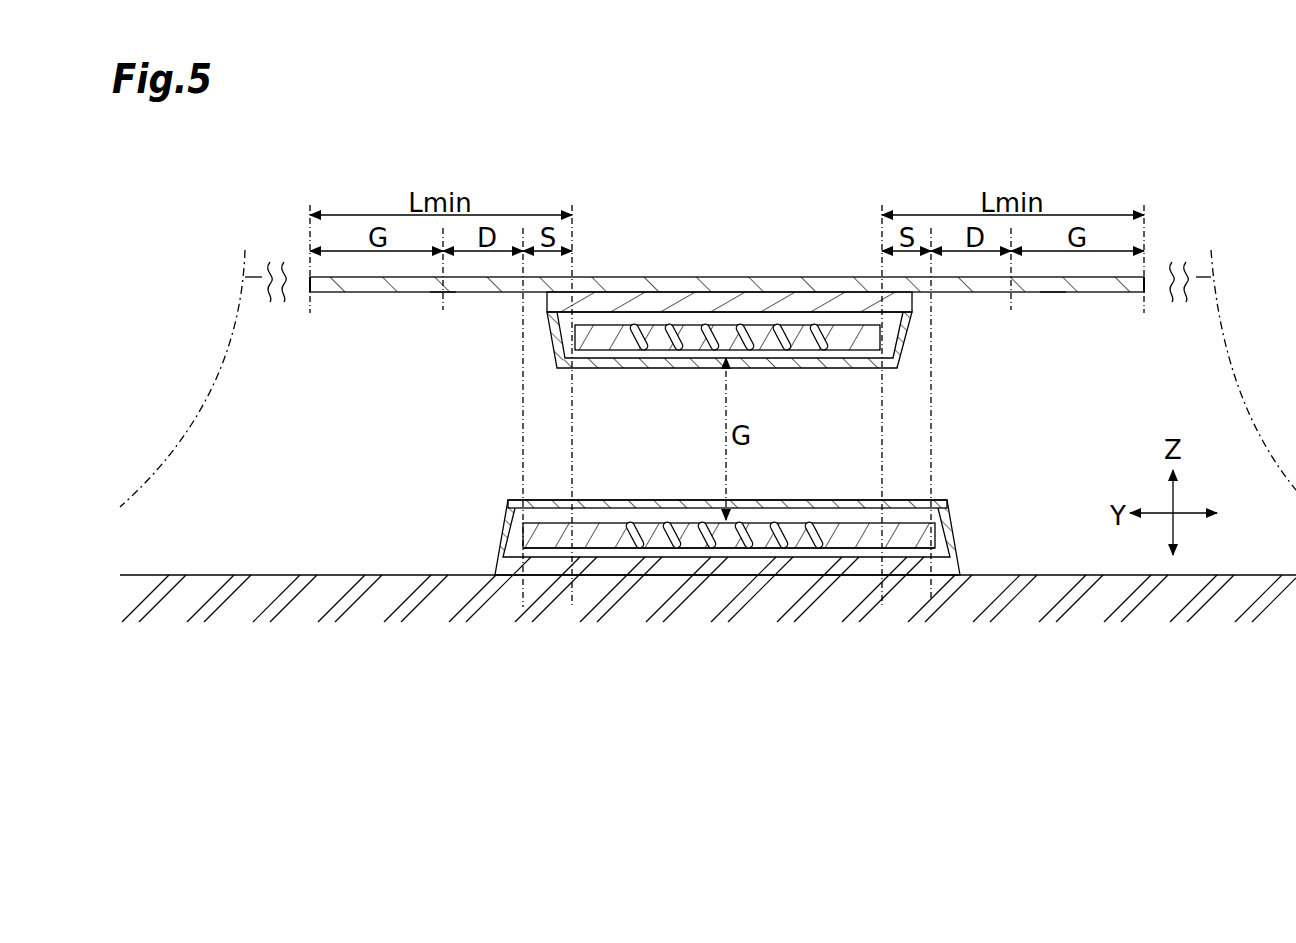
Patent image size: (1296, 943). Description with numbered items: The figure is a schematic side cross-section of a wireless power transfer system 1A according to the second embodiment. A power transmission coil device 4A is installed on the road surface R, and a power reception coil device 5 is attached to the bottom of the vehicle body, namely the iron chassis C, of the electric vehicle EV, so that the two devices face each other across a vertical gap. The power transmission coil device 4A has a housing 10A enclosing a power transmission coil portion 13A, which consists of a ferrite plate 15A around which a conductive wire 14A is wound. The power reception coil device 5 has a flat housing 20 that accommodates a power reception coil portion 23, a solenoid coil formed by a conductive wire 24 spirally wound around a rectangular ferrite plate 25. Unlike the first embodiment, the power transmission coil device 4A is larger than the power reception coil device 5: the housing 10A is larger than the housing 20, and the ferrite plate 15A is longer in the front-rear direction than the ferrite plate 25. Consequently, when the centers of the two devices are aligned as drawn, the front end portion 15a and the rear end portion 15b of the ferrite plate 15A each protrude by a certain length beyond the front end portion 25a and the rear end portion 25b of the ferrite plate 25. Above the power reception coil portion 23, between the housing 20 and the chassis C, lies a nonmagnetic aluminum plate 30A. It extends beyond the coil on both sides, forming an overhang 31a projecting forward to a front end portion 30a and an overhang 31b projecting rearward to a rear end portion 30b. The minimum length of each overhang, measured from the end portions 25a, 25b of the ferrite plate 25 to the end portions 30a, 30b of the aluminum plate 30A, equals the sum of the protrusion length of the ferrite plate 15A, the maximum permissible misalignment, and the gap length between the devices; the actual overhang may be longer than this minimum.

The wireless power transfer system 1A is at (638, 177).
The power transmission coil device 4A is at (649, 494).
The power reception coil device 5 is at (803, 373).
The housing 10A is at (742, 567).
The power transmission coil portion 13A is at (729, 609).
The conductive wire 14A is at (685, 558).
The ferrite plate 15A is at (735, 551).
The front end portion 15a is at (505, 538).
The rear end portion 15b is at (950, 522).
The housing 20 is at (729, 315).
The power reception coil portion 23 is at (723, 221).
The conductive wire 24 is at (738, 316).
The ferrite plate 25 is at (728, 295).
The front end portion 25a is at (553, 336).
The rear end portion 25b is at (905, 345).
The aluminum plate 30A is at (382, 296).
The front end portion 30a is at (312, 292).
The rear end portion 30b is at (1145, 292).
The overhang 31a is at (443, 295).
The overhang 31b is at (1052, 295).
The chassis C is at (262, 280).
The electric vehicle EV is at (1207, 386).
The road surface R is at (325, 575).